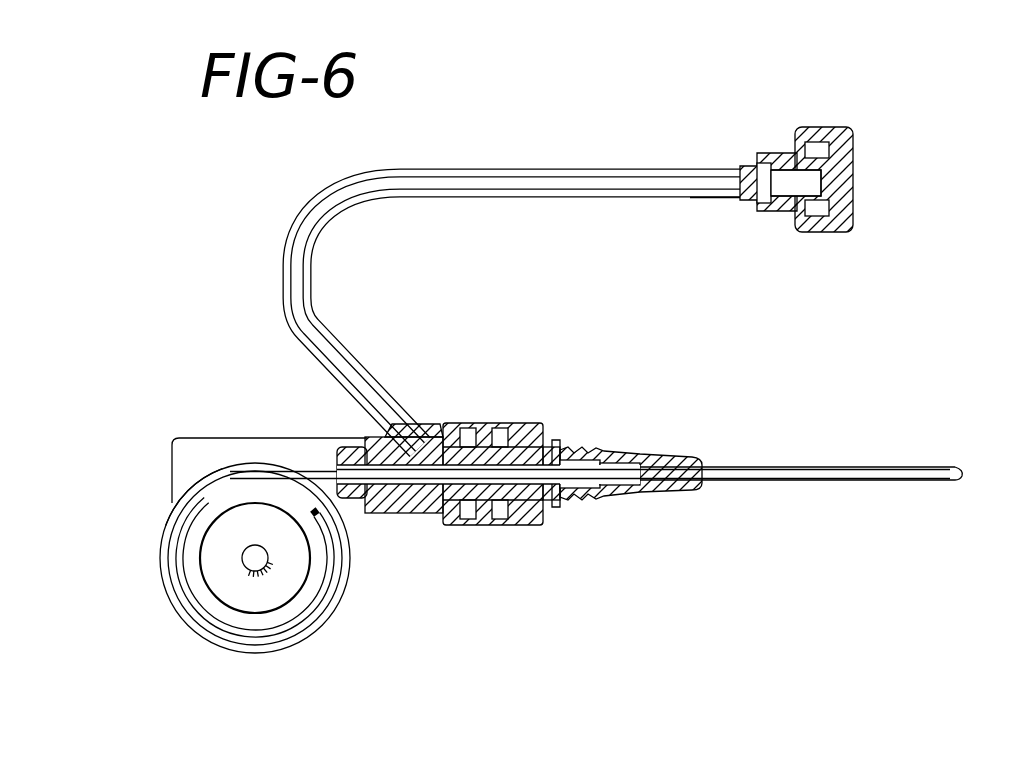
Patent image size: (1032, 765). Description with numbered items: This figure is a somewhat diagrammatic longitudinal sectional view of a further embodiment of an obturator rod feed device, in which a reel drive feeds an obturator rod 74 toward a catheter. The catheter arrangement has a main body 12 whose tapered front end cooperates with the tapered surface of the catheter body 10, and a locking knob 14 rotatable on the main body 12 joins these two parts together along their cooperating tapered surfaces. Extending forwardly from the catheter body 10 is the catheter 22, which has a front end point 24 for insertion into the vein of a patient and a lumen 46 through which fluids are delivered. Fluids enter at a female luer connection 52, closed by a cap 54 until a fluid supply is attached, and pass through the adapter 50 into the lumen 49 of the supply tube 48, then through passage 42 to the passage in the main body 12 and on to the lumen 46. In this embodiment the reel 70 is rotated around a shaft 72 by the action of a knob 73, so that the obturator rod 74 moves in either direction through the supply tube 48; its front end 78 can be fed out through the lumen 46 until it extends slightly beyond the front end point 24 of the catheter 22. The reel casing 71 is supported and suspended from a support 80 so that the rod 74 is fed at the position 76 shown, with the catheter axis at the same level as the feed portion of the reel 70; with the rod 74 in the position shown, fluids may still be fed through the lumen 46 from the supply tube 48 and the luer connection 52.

The catheter body 10 is at (612, 452).
The main body 12 is at (405, 512).
The locking knob 14 is at (500, 425).
The catheter 22 is at (877, 467).
The front end point 24 is at (962, 468).
The passage 42 is at (430, 440).
The lumen 46 is at (822, 467).
The supply tube 48 is at (318, 325).
The lumen 49 is at (470, 178).
The adapter 50 is at (712, 200).
The female luer connection 52 is at (786, 210).
The cap 54 is at (856, 210).
The reel 70 is at (258, 646).
The reel casing 71 is at (310, 648).
The shaft 72 is at (250, 570).
The knob 73 is at (200, 577).
The obturator rod 74 is at (306, 468).
The position 76 is at (222, 466).
The front end 78 is at (553, 502).
The support 80 is at (172, 448).